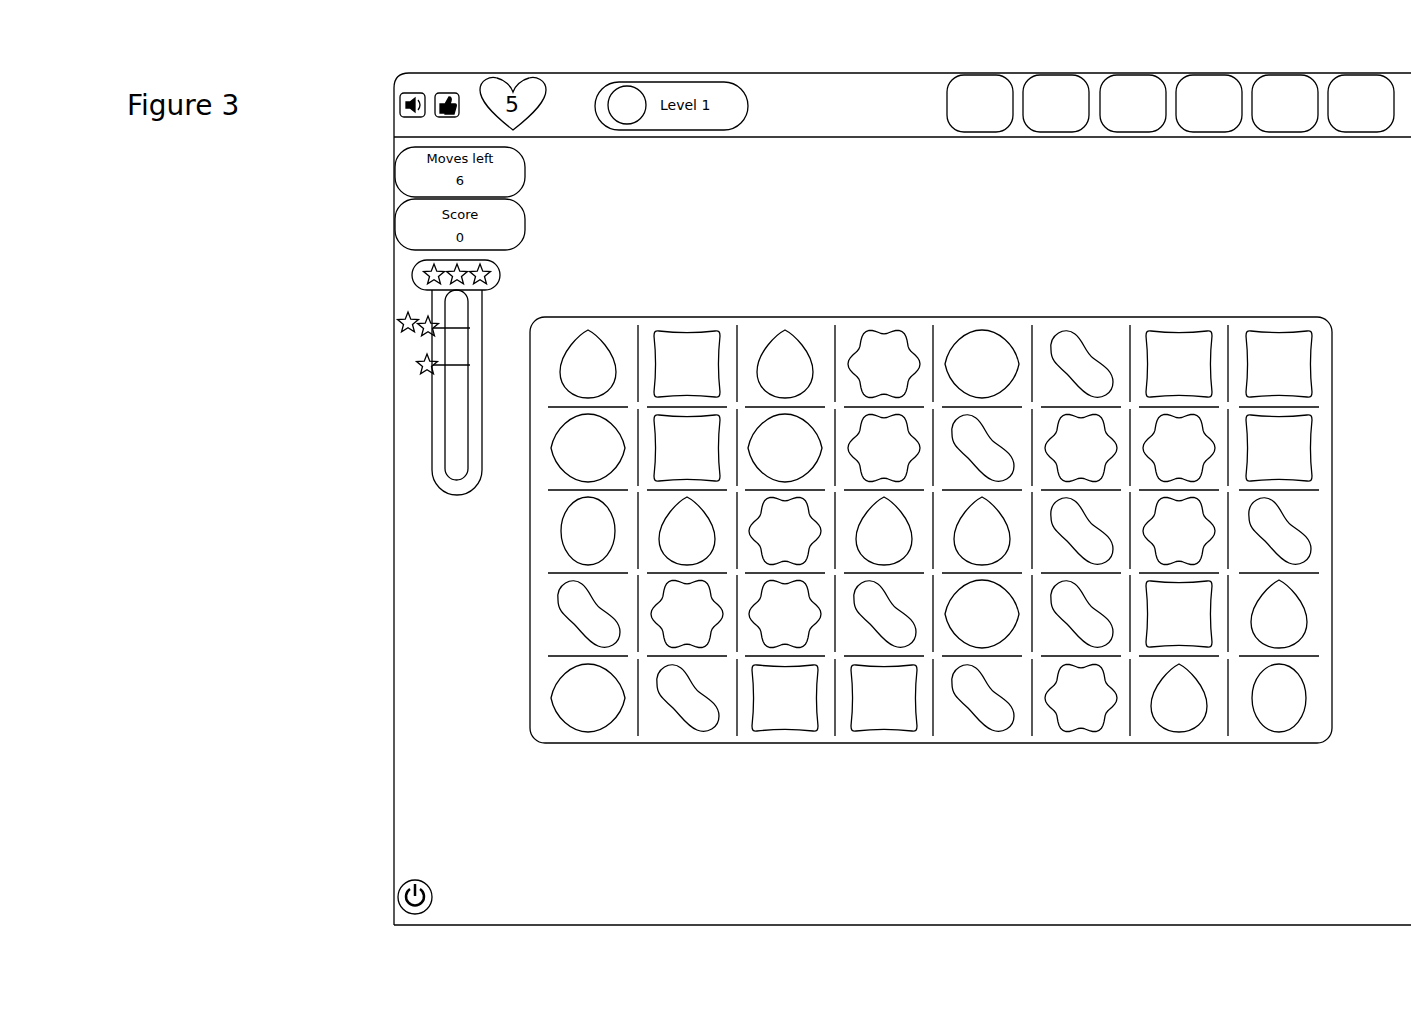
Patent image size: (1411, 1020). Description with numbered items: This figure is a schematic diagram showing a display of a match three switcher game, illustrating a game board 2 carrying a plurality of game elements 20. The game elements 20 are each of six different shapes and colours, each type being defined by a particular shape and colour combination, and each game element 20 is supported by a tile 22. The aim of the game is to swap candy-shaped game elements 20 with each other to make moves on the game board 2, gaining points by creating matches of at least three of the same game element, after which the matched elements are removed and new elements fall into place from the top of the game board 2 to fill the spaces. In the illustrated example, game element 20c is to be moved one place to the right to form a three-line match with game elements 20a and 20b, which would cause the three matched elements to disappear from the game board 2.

The game board 2 is at (1188, 742).
The game elements 20 is at (1288, 372).
The game element 20a is at (1098, 552).
The game element 20b is at (1108, 620).
The game element 20c is at (990, 713).
The tile 22 is at (1322, 354).